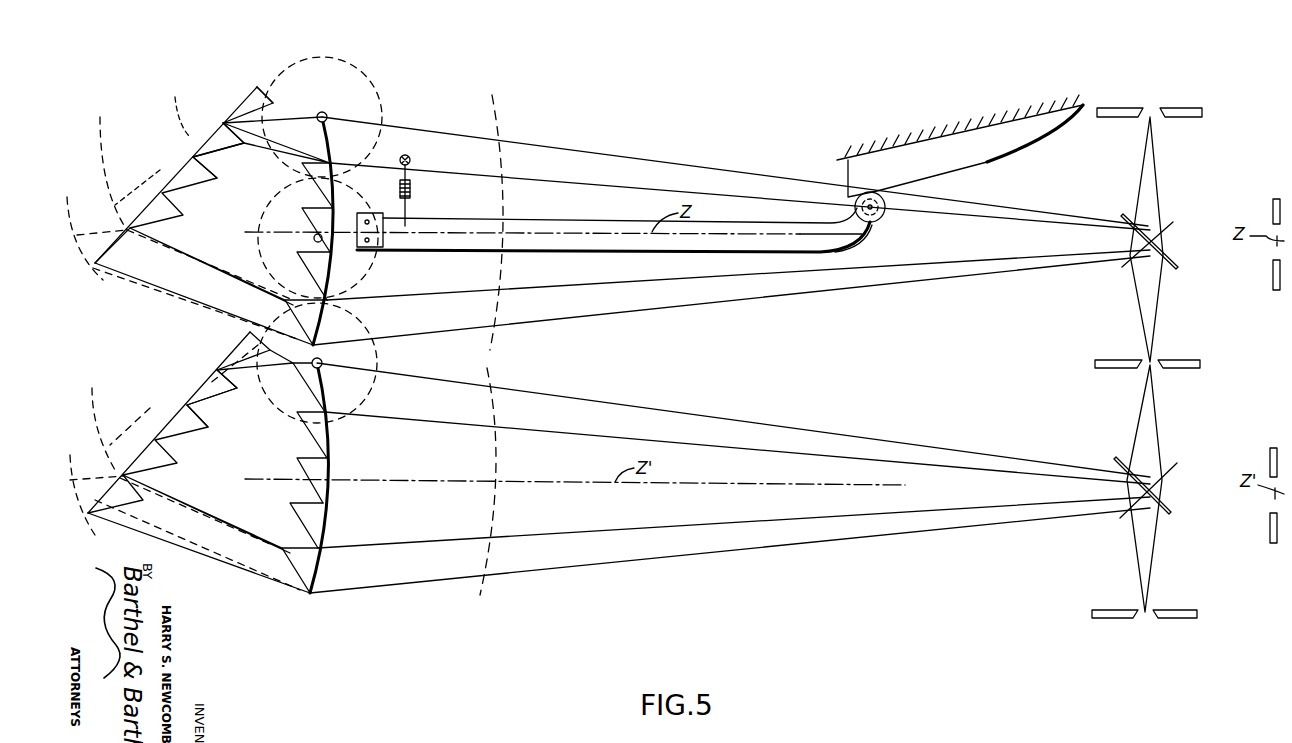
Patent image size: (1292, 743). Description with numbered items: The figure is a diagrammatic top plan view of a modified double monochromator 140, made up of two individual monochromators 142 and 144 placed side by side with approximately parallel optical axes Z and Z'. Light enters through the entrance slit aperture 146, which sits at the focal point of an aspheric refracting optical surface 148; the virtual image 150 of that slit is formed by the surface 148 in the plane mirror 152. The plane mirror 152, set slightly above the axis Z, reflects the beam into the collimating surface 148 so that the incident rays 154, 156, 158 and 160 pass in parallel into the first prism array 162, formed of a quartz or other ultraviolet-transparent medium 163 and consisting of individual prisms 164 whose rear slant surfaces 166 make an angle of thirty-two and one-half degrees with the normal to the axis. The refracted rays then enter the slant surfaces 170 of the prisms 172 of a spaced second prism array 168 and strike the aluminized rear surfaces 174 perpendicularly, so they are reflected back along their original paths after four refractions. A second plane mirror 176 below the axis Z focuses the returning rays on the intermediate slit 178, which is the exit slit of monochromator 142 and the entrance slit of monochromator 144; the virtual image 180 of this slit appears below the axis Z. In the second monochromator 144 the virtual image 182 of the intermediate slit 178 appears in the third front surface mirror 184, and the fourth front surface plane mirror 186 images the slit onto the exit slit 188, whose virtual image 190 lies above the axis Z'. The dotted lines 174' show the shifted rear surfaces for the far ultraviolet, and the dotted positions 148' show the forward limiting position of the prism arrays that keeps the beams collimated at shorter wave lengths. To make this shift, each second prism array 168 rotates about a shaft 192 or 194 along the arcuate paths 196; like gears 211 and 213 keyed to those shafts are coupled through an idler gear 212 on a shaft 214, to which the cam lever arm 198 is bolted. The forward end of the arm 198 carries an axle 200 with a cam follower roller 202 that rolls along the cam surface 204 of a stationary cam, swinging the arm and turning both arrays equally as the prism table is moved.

The double monochromator 140 is at (168, 345).
The first monochromator 142 is at (722, 166).
The second monochromator 144 is at (740, 412).
The entrance slit aperture 146 is at (1152, 108).
The aspheric refracting optical surface 148 is at (349, 355).
The dotted line positions of aspheric surface 148' is at (533, 345).
The virtual image of entrance slit 150 is at (1273, 203).
The plane mirror 152 is at (1185, 213).
The incident ray 154 is at (290, 108).
The incident ray 156 is at (297, 124).
The incident ray 158 is at (138, 293).
The incident ray 160 is at (210, 272).
The first prism array 162 is at (300, 206).
The medium 163 is at (364, 216).
The prism 164 is at (326, 266).
The rear slant surface 166 is at (299, 294).
The second prism array 168 is at (183, 155).
The slant surface 170 is at (226, 155).
The prism 172 is at (210, 134).
The aluminized rear surface 174 is at (209, 300).
The dotted lines of shifted rear surfaces 174' is at (181, 313).
The second plane mirror 176 is at (1163, 256).
The intermediate slit 178 is at (1152, 360).
The virtual image of intermediate slit 180 is at (1273, 276).
The virtual image of intermediate slit 182 is at (1270, 528).
The third front surface mirror 184 is at (1176, 468).
The fourth front surface plane mirror 186 is at (1172, 503).
The exit slit 188 is at (1147, 620).
The virtual image of exit slit 190 is at (1270, 458).
The shaft 192 is at (328, 113).
The shaft 194 is at (324, 370).
The arcuate lines 196 is at (106, 122).
The cam lever arm 198 is at (570, 252).
The axle 200 is at (878, 232).
The cam follower roller 202 is at (888, 208).
The cam surface 204 is at (990, 165).
The gear 211 is at (382, 116).
The idler gear 212 is at (385, 271).
The gear 213 is at (380, 365).
The shaft 214 is at (313, 240).